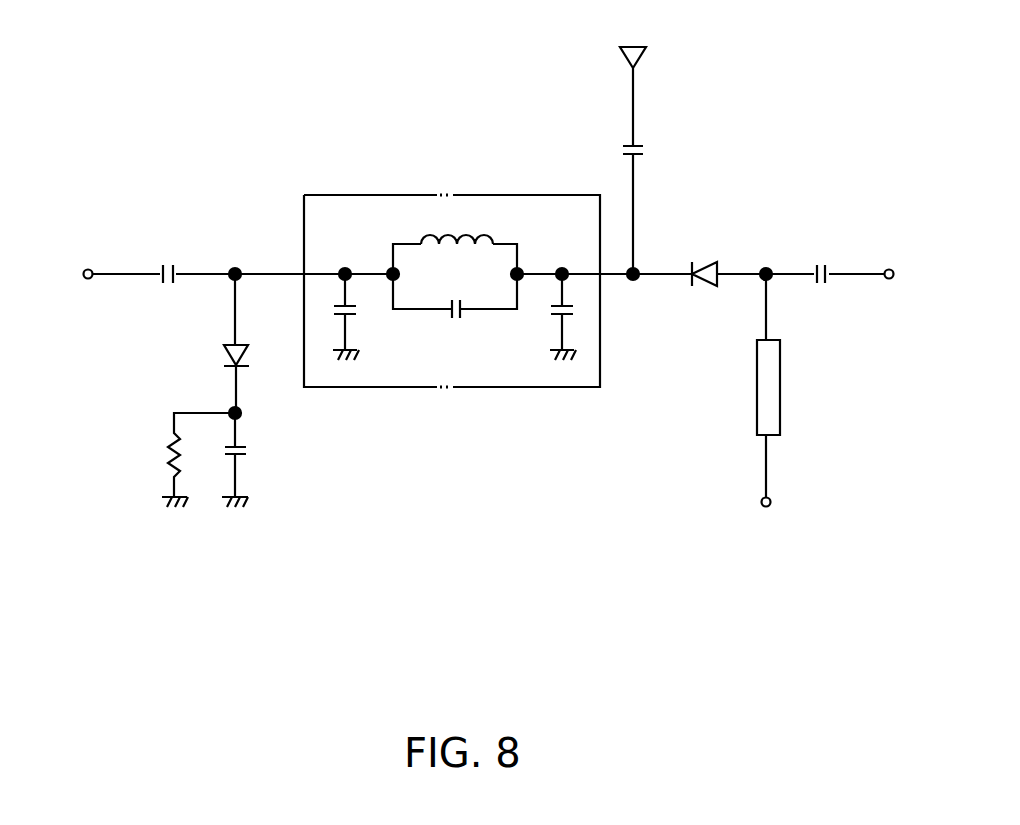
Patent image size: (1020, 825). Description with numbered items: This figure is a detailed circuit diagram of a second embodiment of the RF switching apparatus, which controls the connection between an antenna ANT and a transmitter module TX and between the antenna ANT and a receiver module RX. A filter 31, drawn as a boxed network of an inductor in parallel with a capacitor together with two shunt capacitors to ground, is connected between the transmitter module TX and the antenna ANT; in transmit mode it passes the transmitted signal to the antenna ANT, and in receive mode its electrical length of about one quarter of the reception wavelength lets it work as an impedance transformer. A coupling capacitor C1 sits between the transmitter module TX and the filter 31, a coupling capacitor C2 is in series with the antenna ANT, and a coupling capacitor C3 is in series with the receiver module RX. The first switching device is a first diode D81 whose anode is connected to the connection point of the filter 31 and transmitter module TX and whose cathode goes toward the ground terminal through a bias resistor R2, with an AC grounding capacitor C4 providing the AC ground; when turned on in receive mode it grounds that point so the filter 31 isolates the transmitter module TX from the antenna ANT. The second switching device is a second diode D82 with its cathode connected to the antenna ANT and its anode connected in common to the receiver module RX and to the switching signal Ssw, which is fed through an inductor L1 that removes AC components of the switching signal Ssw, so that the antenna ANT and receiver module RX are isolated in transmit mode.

The filter 31 is at (356, 195).
The coupling capacitor C1 is at (166, 258).
The coupling capacitor C2 is at (653, 206).
The coupling capacitor C3 is at (818, 256).
The AC grounding capacitor C4 is at (255, 460).
The first diode D81 is at (212, 343).
The second diode D82 is at (702, 258).
The bias resistor R2 is at (182, 460).
The inductor L1 is at (787, 385).
The transmitter module TX is at (66, 275).
The receiver module RX is at (911, 275).
The antenna ANT is at (631, 79).
The switching signal Ssw is at (765, 522).